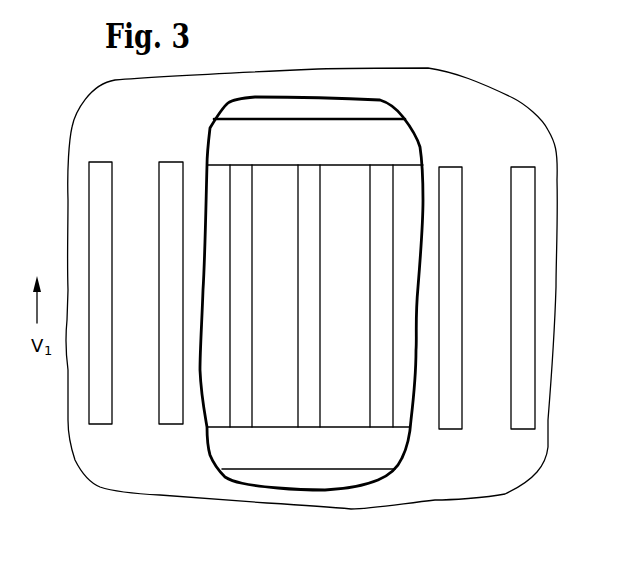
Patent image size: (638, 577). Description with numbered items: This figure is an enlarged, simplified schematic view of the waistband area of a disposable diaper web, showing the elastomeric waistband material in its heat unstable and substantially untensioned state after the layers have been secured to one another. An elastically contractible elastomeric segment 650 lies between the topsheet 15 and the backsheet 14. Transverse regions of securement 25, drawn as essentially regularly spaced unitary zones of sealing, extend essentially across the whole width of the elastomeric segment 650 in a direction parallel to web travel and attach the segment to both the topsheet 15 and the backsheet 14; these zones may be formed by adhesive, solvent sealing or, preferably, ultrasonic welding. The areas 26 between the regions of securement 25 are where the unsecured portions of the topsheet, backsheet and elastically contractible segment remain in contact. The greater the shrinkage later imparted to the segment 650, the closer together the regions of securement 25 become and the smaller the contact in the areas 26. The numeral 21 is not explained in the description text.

The backsheet 14 is at (425, 474).
The ring-shaped coil outline 21 is at (368, 112).
The topsheet 15 is at (235, 448).
The elastomeric segment 650 is at (295, 236).
The areas 26 is at (197, 200).
The transverse regions of securement 25 is at (518, 190).